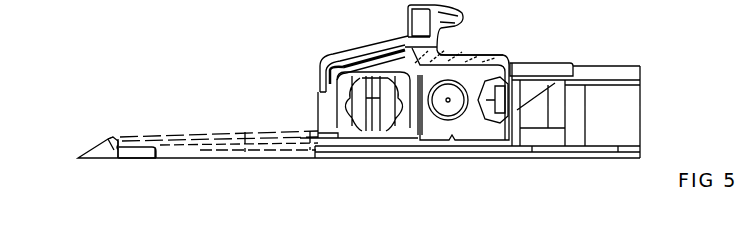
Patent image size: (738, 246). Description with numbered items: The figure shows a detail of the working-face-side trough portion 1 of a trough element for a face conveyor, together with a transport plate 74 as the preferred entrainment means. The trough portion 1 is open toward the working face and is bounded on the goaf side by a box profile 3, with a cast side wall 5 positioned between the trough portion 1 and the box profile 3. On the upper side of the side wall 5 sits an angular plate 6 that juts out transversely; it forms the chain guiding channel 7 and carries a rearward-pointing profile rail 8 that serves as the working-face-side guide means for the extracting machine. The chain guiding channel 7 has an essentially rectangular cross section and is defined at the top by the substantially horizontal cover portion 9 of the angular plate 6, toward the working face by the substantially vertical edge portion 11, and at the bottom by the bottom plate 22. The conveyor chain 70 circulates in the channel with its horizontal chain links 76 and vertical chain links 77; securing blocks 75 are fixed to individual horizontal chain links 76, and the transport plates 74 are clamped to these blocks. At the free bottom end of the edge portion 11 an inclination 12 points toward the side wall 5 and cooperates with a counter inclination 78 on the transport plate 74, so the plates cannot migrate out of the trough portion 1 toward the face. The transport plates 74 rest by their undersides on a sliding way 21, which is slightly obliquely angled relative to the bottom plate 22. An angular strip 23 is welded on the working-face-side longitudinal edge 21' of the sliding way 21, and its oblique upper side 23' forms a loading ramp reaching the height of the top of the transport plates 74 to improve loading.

The trough portion 1 is at (198, 106).
The box profile 3 is at (611, 135).
The side wall 5 is at (478, 136).
The angular plate 6 is at (397, 25).
The chain guiding channel 7 is at (345, 64).
The profile rail 8 is at (456, 22).
The cover portion 9 is at (366, 58).
The edge portion 11 is at (322, 72).
The inclination 12 is at (318, 86).
The sliding way 21 is at (137, 170).
The longitudinal edge 21' is at (119, 165).
The bottom plate 22 is at (436, 150).
The angular strip 23 is at (98, 137).
The oblique upper side 23' is at (112, 122).
The conveyor chain 70 is at (356, 144).
The transport plate 74 is at (245, 136).
The securing block 75 is at (403, 132).
The horizontal chain link 76 is at (389, 112).
The vertical chain link 77 is at (376, 122).
The counter inclination 78 is at (326, 85).